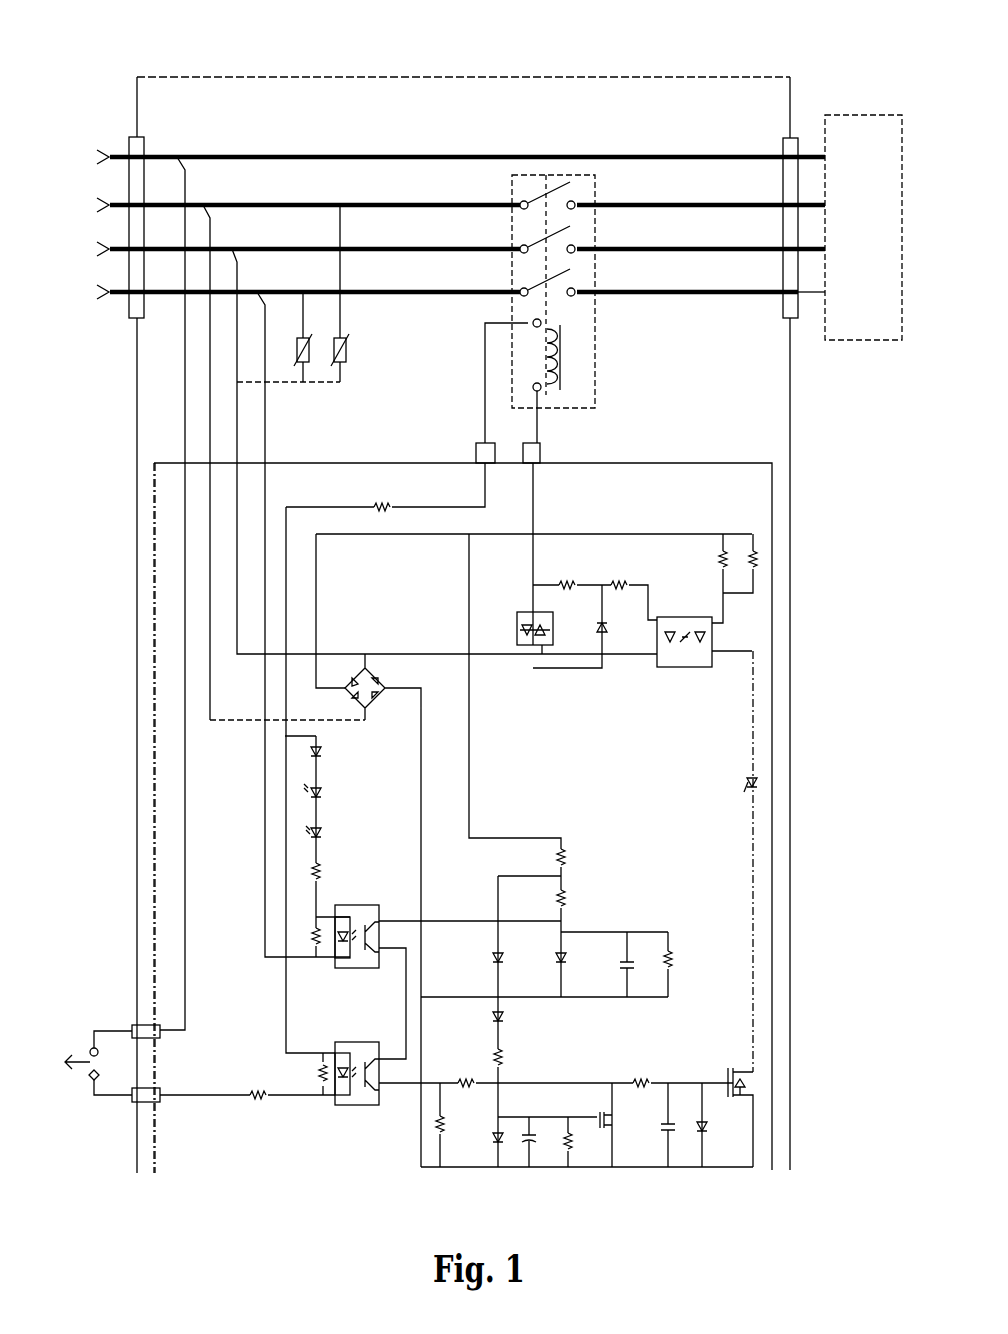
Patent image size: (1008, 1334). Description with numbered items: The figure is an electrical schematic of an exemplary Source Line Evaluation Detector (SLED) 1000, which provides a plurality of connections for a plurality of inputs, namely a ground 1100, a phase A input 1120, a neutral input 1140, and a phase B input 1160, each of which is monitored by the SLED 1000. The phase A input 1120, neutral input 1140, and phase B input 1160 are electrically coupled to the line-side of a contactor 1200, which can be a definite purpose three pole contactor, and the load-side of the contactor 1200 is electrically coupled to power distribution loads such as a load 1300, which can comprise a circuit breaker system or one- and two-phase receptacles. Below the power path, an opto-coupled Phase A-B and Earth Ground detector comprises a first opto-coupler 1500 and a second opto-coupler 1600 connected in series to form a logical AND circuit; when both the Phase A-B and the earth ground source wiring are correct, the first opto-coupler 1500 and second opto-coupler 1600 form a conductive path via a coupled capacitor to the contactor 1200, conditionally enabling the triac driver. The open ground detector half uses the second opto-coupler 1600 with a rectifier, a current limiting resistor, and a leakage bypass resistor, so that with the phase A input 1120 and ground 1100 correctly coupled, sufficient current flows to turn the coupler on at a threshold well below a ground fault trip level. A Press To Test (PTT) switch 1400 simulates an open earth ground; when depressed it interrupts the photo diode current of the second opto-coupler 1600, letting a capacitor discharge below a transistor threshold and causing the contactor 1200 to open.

The Source Line Evaluation Detector (SLED) 1000 is at (187, 47).
The ground 1100 is at (426, 159).
The phase A input 1120 is at (426, 206).
The neutral input 1140 is at (426, 250).
The phase B input 1160 is at (426, 293).
The contactor 1200 is at (597, 358).
The load 1300 is at (863, 212).
The Press To Test (PTT) switch 1400 is at (186, 1046).
The first opto-coupler 1500 is at (355, 922).
The second opto-coupler 1600 is at (355, 1060).